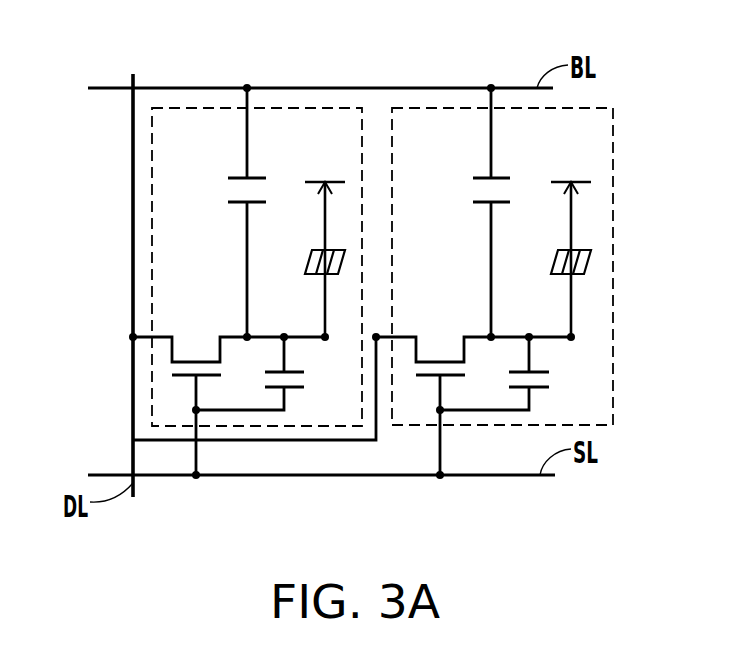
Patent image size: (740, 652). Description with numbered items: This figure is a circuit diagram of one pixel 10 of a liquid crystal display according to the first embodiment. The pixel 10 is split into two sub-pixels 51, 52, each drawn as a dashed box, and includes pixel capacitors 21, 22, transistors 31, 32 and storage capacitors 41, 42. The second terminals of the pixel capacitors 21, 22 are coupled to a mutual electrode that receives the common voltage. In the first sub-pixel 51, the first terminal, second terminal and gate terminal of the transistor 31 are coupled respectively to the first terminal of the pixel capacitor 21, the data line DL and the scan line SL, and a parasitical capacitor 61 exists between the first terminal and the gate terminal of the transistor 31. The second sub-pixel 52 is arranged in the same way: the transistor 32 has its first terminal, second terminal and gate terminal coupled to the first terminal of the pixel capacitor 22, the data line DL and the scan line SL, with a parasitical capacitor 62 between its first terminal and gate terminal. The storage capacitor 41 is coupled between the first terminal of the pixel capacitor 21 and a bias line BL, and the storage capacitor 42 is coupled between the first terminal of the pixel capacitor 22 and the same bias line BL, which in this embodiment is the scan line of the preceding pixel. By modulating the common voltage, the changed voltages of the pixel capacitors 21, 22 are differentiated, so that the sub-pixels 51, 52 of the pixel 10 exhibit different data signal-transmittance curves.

The pixel 10 is at (628, 533).
The sub-pixel 51 is at (205, 107).
The sub-pixel 52 is at (444, 107).
The storage capacitor 41 is at (228, 192).
The storage capacitor 42 is at (473, 192).
The pixel capacitor 21 is at (306, 262).
The pixel capacitor 22 is at (552, 262).
The transistor 31 is at (195, 342).
The transistor 32 is at (440, 342).
The parasitical capacitor 61 is at (296, 392).
The parasitical capacitor 62 is at (553, 377).